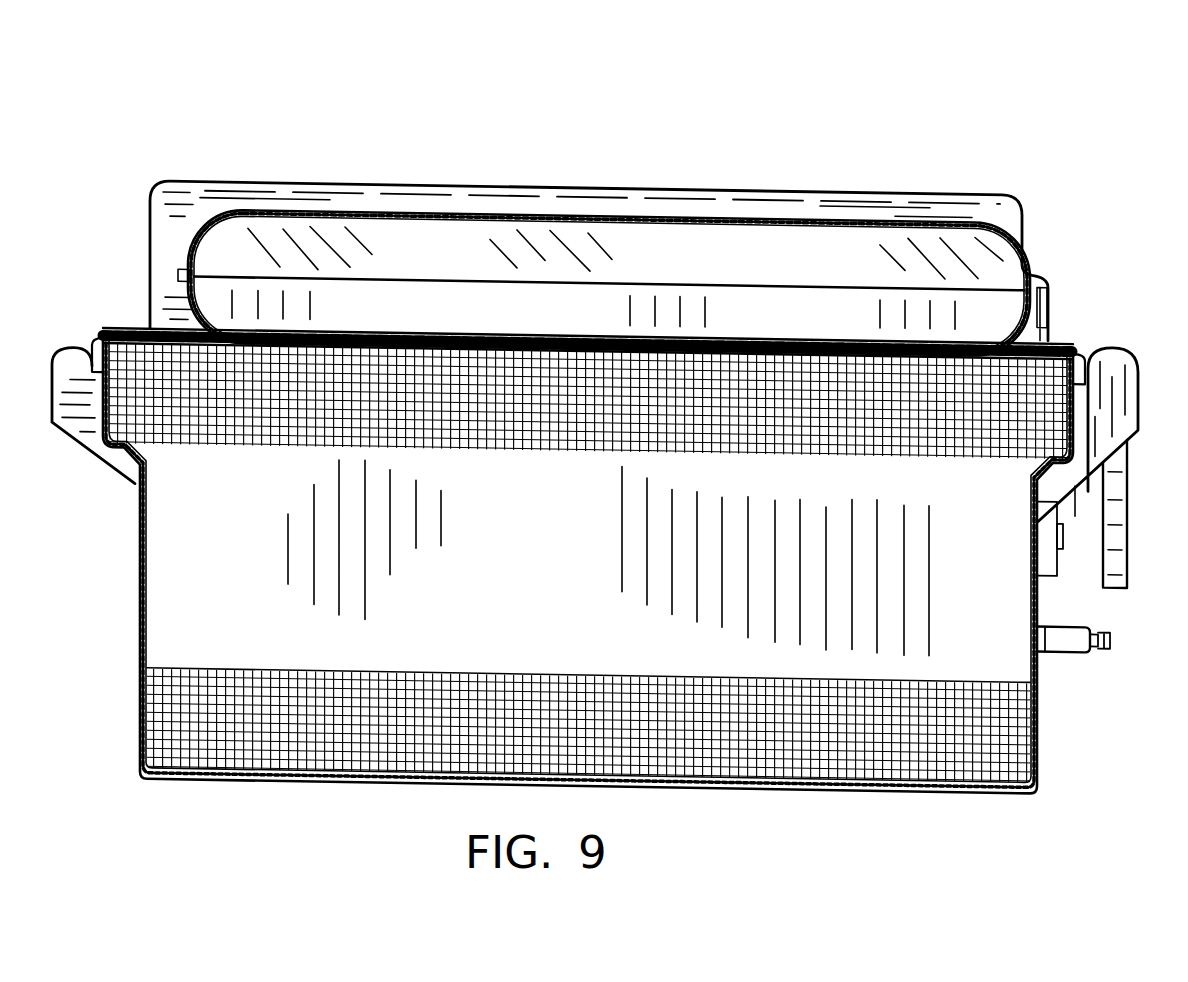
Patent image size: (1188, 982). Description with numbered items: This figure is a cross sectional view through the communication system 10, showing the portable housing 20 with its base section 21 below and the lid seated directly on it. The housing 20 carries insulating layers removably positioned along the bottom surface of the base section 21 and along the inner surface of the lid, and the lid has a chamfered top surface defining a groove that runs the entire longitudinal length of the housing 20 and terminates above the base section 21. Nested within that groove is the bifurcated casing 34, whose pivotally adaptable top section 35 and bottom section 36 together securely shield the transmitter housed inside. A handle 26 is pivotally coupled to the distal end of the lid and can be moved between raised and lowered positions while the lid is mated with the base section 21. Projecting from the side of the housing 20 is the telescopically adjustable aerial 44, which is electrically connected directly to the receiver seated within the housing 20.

The system 10 is at (620, 457).
The portable housing 20 is at (943, 754).
The base section 21 is at (1015, 753).
The handle 26 is at (1125, 546).
The bifurcated casing 34 is at (930, 223).
The top section 35 is at (450, 226).
The bottom section 36 is at (515, 293).
The telescopically adjustable aerial 44 is at (1072, 624).